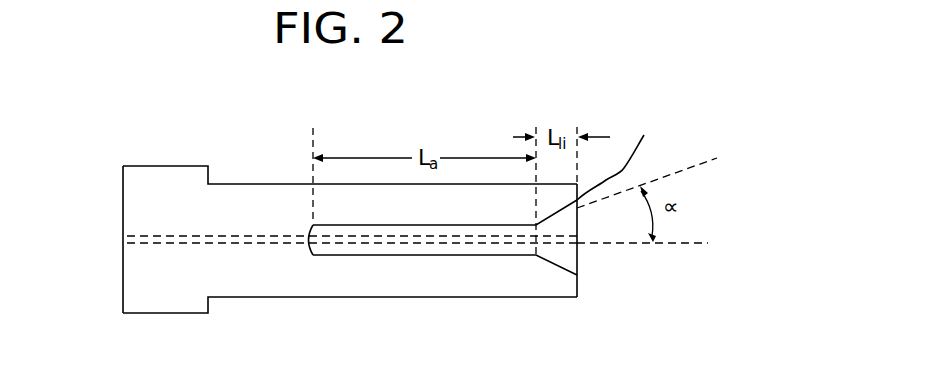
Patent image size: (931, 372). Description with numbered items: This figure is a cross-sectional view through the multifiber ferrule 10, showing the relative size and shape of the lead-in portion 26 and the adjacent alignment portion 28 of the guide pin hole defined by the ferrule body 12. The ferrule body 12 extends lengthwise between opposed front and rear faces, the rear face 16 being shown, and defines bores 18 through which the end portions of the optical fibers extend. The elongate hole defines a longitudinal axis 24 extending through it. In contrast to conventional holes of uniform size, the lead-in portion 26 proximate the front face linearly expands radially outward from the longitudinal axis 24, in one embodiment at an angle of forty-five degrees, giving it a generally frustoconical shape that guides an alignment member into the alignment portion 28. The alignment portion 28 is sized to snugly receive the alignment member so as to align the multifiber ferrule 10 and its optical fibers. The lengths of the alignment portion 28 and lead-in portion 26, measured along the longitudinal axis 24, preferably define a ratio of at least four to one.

The multifiber ferrule 10 is at (430, 104).
The ferrule body 12 is at (258, 203).
The rear face 16 is at (123, 193).
The bores 18 is at (120, 242).
The longitudinal axis 24 is at (668, 244).
The lead-in portion 26 is at (620, 156).
The alignment portion 28 is at (485, 255).